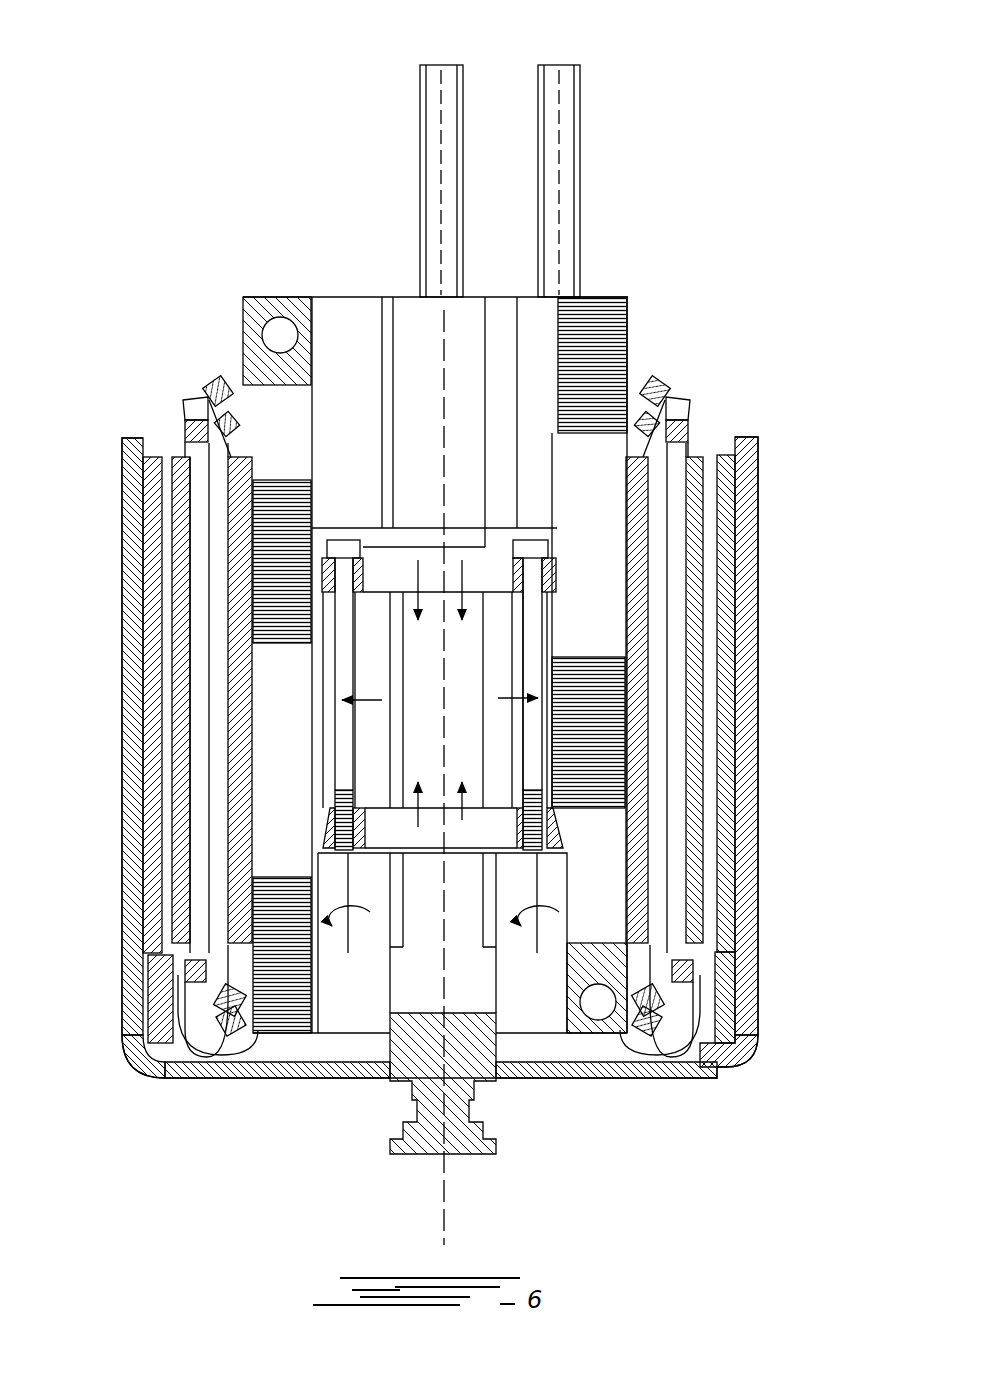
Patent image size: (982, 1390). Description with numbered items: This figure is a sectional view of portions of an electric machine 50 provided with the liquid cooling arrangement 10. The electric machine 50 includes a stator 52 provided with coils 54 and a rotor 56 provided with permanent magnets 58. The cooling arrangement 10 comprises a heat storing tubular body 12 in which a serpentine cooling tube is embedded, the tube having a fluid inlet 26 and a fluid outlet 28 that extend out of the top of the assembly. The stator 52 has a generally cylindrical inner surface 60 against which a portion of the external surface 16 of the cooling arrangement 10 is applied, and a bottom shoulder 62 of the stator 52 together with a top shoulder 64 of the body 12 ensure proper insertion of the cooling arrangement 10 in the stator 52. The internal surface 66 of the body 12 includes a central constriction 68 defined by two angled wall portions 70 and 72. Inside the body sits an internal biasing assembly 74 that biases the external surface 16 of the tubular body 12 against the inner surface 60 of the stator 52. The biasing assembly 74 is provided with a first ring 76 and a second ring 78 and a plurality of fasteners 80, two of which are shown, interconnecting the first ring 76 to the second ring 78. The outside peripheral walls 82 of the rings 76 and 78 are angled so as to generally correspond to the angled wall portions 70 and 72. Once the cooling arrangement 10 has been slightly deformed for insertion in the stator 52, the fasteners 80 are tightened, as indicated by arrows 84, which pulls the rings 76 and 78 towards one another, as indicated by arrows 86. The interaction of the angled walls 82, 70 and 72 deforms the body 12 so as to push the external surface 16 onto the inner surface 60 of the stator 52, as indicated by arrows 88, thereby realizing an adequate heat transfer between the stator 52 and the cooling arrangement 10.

The liquid cooling arrangement 10 is at (633, 290).
The tubular body 12 is at (290, 300).
The external surface 16 is at (250, 697).
The fluid inlet 26 is at (562, 63).
The fluid outlet 28 is at (438, 63).
The electric machine 50 is at (185, 168).
The stator 52 is at (690, 452).
The coils 54 is at (678, 400).
The rotor 56 is at (758, 457).
The permanent magnets 58 is at (724, 510).
The inner surface 60 is at (250, 550).
The bottom shoulder 62 is at (245, 930).
The top shoulder 64 is at (212, 462).
The internal surface 66 is at (557, 370).
The central constriction 68 is at (550, 647).
The angled wall portion 70 is at (550, 557).
The angled wall portion 72 is at (563, 853).
The internal biasing assembly 74 is at (557, 587).
The first ring 76 is at (483, 577).
The second ring 78 is at (473, 827).
The fasteners 80 is at (348, 742).
The outside peripheral walls 82 is at (325, 562).
The arrows 84 is at (370, 925).
The arrows 86 is at (462, 612).
The arrows 88 is at (368, 700).